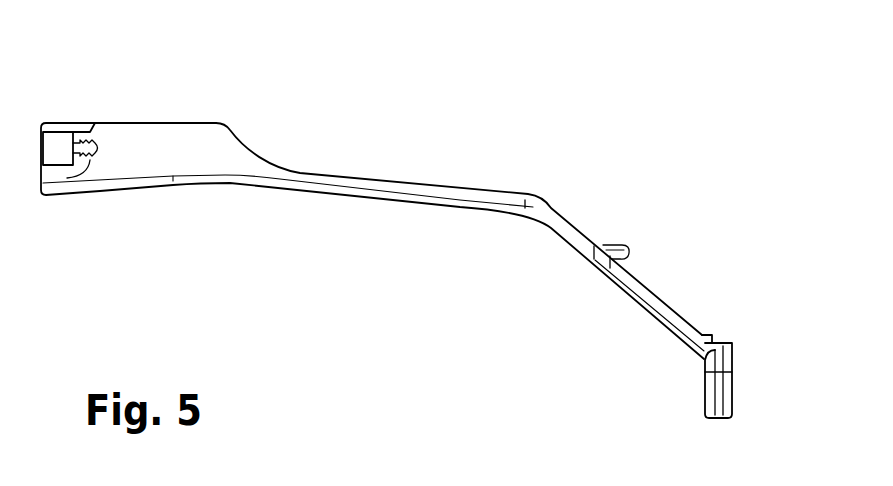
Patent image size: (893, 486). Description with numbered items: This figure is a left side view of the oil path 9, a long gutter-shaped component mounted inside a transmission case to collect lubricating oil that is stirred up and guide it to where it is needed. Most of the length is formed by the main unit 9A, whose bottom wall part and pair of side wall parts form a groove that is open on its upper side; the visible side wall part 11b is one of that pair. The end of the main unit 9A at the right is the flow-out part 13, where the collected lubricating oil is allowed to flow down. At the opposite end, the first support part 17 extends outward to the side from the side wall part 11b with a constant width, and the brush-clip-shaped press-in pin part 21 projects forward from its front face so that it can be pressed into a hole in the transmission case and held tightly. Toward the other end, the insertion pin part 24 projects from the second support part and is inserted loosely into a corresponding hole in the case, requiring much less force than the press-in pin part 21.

The oil path 9 is at (421, 62).
The main unit 9A is at (428, 176).
The other side wall part 11b is at (233, 160).
The flow-out part 13 is at (730, 398).
The first support part 17 is at (55, 140).
The press-in pin part 21 is at (98, 155).
The insertion pin part 24 is at (617, 245).